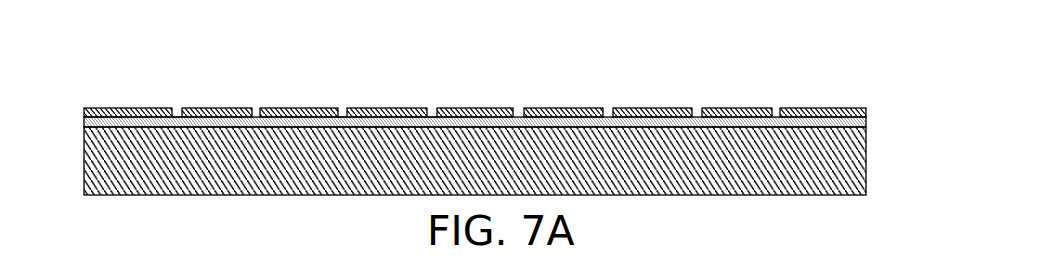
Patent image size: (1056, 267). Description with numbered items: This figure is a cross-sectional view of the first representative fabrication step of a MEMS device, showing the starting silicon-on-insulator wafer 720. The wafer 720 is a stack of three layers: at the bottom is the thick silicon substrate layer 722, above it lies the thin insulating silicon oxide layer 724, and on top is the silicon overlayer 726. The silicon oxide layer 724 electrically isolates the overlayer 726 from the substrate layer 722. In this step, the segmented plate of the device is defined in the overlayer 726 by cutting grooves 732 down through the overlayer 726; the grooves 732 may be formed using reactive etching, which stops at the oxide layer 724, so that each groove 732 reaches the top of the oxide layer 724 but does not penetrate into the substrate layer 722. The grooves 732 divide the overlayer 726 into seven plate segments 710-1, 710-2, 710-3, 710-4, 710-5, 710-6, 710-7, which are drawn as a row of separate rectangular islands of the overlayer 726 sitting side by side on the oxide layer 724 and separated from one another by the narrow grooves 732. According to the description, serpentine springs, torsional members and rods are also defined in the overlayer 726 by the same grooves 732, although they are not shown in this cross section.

The silicon-on-insulator wafer 720 is at (560, 113).
The substrate layer 722 is at (866, 162).
The insulating silicon oxide layer 724 is at (866, 122).
The overlayer 726 is at (512, 72).
The segment of segmented plate 710-1 is at (205, 108).
The segment of segmented plate 710-2 is at (282, 108).
The segment of segmented plate 710-3 is at (395, 108).
The segment of segmented plate 710-4 is at (497, 108).
The segment of segmented plate 710-5 is at (592, 108).
The segment of segmented plate 710-6 is at (683, 108).
The segment of segmented plate 710-7 is at (762, 108).
The grooves 732 is at (171, 100).